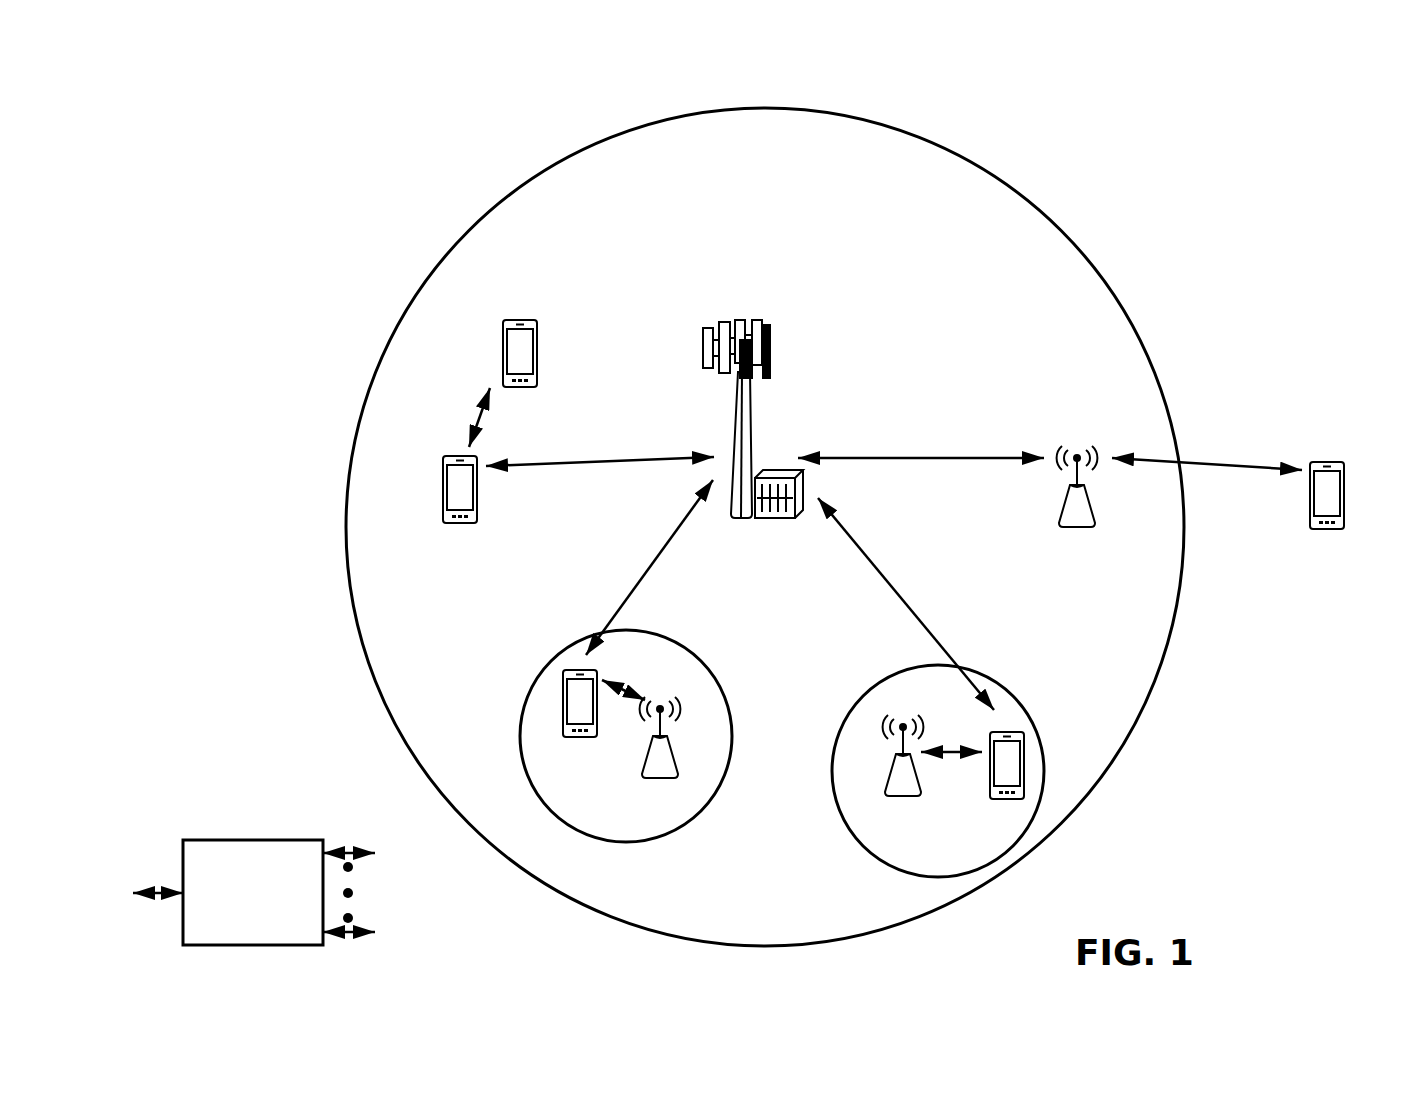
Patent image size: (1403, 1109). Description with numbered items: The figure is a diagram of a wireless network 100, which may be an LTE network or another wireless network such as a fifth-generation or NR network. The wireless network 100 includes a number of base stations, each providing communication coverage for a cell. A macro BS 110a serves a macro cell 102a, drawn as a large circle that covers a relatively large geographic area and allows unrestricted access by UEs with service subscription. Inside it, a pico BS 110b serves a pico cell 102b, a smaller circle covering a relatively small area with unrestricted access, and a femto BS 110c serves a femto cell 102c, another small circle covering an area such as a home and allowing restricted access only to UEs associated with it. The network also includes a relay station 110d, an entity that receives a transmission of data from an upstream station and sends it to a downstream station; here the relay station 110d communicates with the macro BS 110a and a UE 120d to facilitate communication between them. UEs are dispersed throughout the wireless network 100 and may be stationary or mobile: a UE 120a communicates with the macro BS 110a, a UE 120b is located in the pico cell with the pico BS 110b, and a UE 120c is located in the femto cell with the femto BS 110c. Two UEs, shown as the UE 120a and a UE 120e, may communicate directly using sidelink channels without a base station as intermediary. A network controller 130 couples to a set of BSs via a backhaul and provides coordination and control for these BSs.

The wireless network 100 is at (240, 107).
The macro cell 102a is at (1040, 212).
The pico cell 102b is at (714, 680).
The femto cell 102c is at (878, 686).
The macro BS 110a is at (765, 315).
The pico BS 110b is at (679, 768).
The femto BS 110c is at (886, 780).
The relay station 110d is at (1078, 447).
The UE 120a is at (443, 487).
The UE 120b is at (568, 739).
The UE 120c is at (988, 800).
The UE 120d is at (1340, 460).
The UE 120e is at (503, 340).
The network controller 130 is at (253, 840).